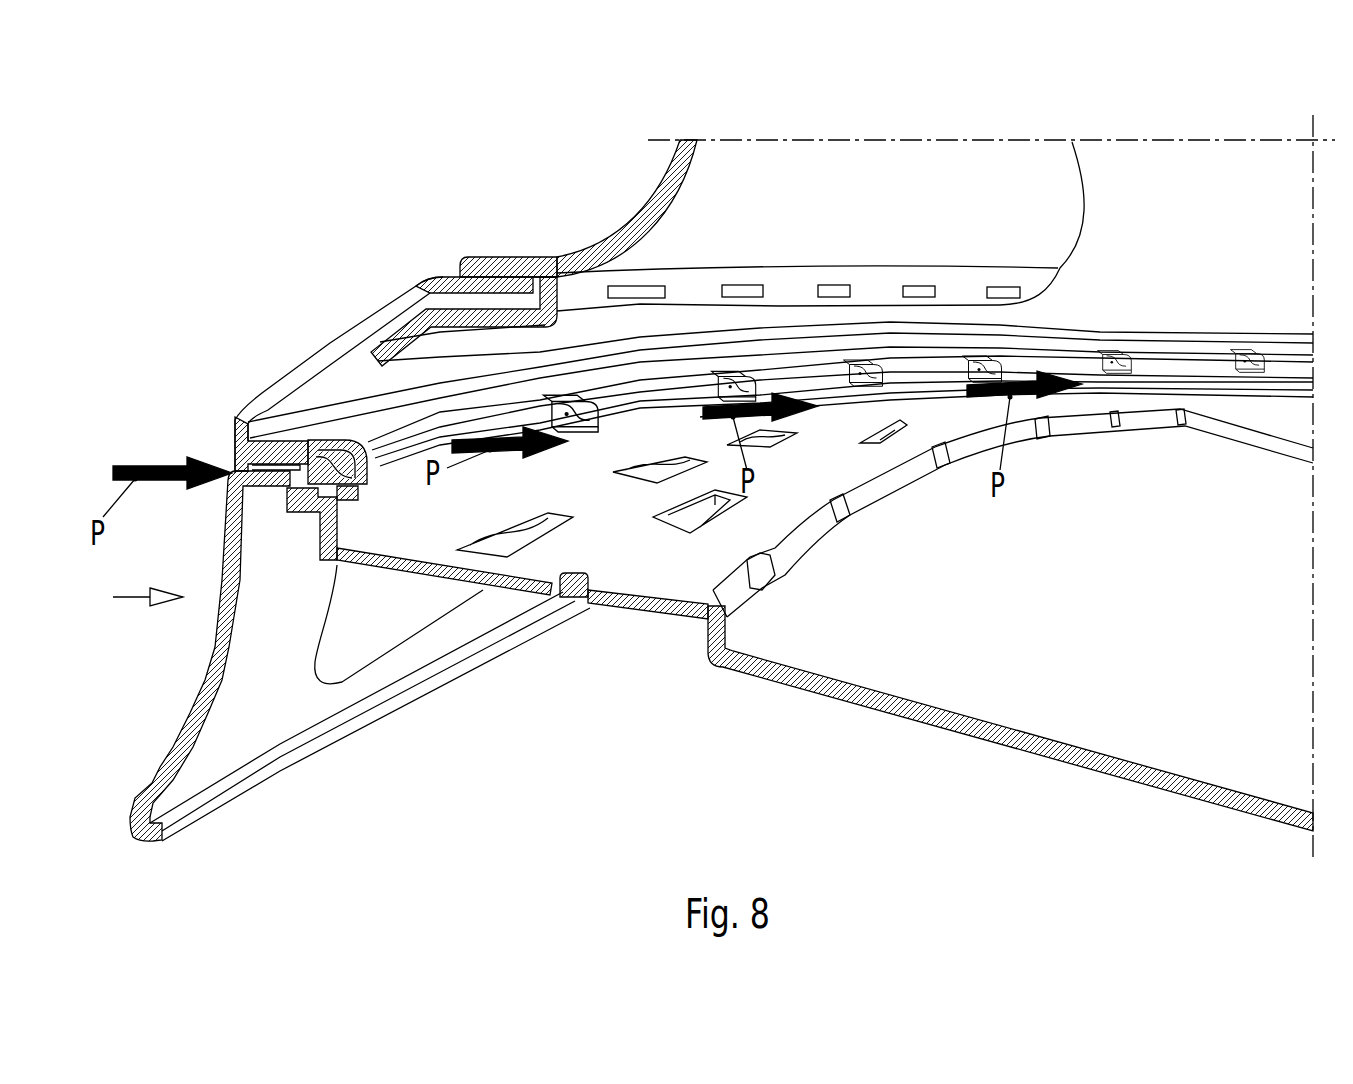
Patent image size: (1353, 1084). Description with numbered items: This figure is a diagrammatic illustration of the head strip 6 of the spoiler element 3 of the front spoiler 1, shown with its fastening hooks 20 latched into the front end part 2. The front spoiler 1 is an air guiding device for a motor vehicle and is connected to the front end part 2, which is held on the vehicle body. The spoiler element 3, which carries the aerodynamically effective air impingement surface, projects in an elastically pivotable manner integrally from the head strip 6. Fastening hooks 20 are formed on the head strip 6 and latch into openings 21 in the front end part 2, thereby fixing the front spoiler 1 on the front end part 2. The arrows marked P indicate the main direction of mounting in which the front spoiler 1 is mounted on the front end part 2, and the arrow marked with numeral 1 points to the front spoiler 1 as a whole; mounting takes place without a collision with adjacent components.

The front spoiler 1 is at (113, 597).
The front end part 2 is at (948, 720).
The spoiler element 3 is at (218, 657).
The head strip 6 is at (250, 475).
The fastening hooks 20 is at (1250, 360).
The openings 21 is at (333, 497).